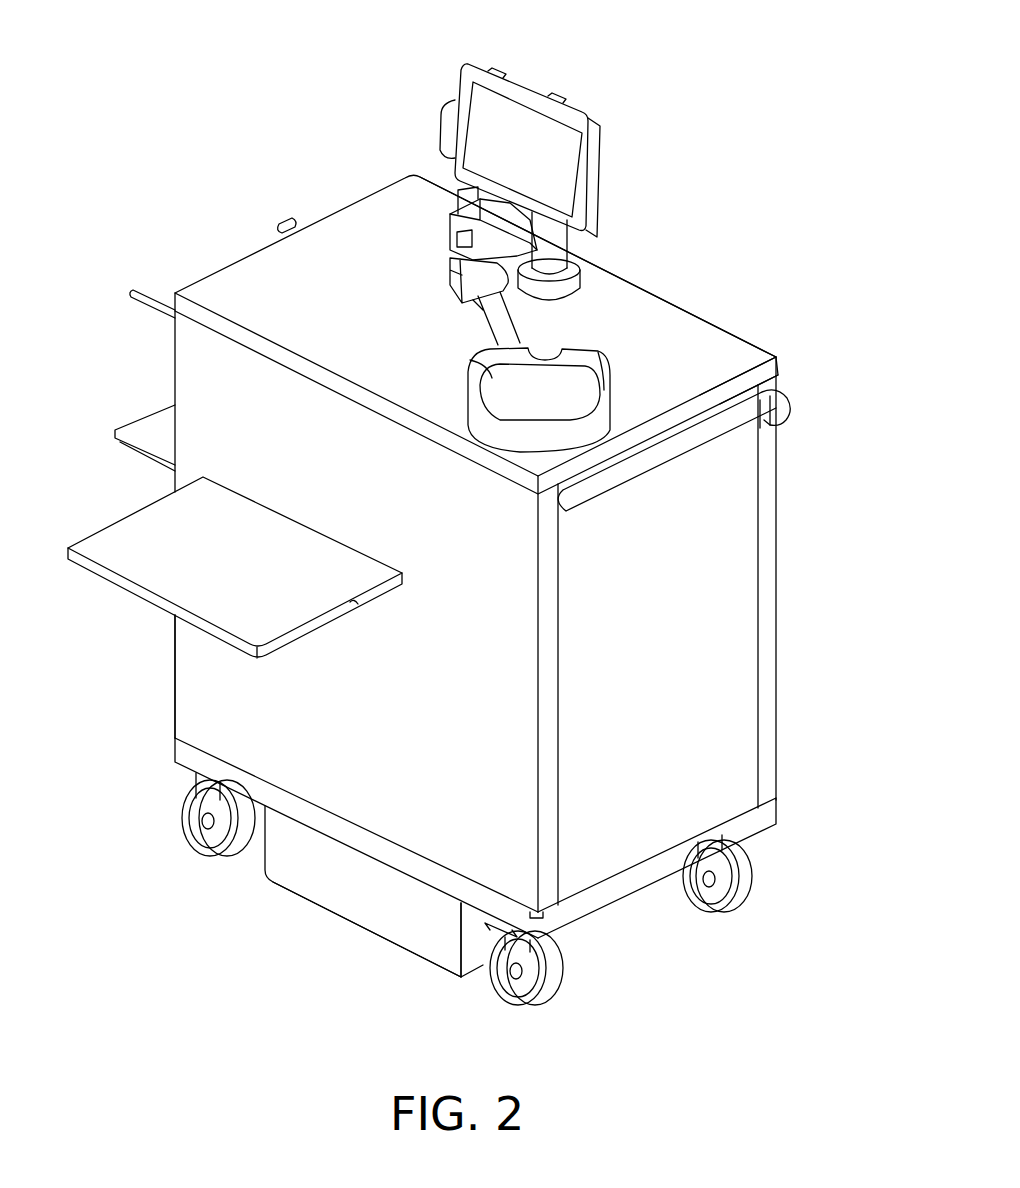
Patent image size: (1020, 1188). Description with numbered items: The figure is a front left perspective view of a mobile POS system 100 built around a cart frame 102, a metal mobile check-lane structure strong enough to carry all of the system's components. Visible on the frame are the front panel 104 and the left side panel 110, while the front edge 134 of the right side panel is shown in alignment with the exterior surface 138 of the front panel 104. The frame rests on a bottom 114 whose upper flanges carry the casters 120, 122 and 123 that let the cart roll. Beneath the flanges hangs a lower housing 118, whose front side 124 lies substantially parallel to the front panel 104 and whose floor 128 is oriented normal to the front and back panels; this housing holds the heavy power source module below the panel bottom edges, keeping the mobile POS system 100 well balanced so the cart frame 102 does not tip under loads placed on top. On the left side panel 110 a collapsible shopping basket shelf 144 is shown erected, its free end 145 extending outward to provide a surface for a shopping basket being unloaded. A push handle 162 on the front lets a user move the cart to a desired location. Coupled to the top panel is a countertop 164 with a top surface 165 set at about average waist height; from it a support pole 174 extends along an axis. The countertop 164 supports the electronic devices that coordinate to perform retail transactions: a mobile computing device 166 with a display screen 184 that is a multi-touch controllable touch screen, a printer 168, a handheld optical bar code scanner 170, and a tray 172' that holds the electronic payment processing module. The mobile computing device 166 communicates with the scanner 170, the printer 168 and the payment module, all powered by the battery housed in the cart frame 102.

The mobile POS system 100 is at (150, 182).
The cart frame 102 is at (785, 462).
The front panel 104 is at (730, 590).
The left side panel 110 is at (218, 698).
The bottom 114 is at (372, 947).
The lower housing 118 is at (328, 879).
The caster 120 is at (222, 860).
The caster 122 is at (555, 992).
The caster 123 is at (740, 902).
The front side 124 is at (478, 953).
The floor 128 is at (335, 918).
The front edge 134 is at (768, 527).
The exterior surface 138 is at (710, 672).
The shopping basket shelf 144 is at (320, 624).
The free end 145 is at (115, 583).
The push handle 162 is at (628, 493).
The countertop 164 is at (750, 345).
The top surface 165 is at (668, 322).
The mobile computing device 166 is at (598, 176).
The printer 168 is at (470, 223).
The handheld optical bar code scanner 170 is at (507, 320).
The tray 172' is at (594, 400).
The support pole 174 is at (553, 246).
The display screen 184 is at (505, 135).